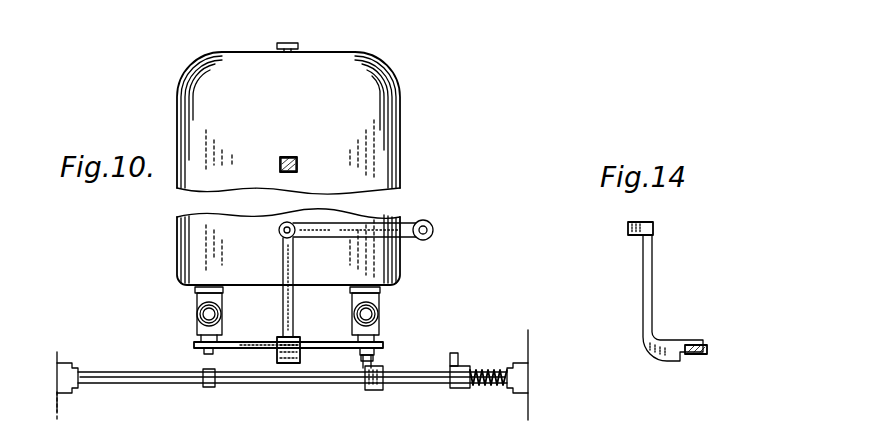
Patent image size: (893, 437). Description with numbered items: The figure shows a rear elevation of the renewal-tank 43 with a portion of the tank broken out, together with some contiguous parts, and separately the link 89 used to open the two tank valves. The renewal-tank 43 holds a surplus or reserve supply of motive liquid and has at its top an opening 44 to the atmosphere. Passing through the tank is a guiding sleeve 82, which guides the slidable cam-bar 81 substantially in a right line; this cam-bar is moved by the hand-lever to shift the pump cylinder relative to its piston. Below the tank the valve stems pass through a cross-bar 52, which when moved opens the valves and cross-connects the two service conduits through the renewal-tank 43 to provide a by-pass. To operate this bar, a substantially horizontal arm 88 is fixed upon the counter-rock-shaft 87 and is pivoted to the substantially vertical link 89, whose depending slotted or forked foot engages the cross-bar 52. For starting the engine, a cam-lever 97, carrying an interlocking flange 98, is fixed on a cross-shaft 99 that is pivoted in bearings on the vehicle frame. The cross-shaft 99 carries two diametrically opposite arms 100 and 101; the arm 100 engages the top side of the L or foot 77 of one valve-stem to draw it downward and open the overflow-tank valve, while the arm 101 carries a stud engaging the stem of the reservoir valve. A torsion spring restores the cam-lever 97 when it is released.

In FIG. 10, the renewal-tank 43 is at (399, 216).
In FIG. 10, the opening 44 is at (298, 46).
In FIG. 10, the cam-bar 81 is at (280, 164).
In FIG. 10, the guiding sleeve 82 is at (290, 157).
In FIG. 10, the counter-rock-shaft 87 is at (433, 230).
In FIG. 10, the arm 88 is at (347, 249).
In FIG. 14, the arm 88 is at (635, 238).
In FIG. 10, the link 89 is at (283, 263).
In FIG. 14, the link 89 is at (652, 268).
In FIG. 10, the cross-bar 52 is at (288, 320).
In FIG. 14, the cross-bar 52 is at (708, 348).
In FIG. 10, the arm 100 is at (372, 372).
In FIG. 10, the cross-shaft 99 is at (420, 381).
In FIG. 10, the arm 101 is at (210, 388).
In FIG. 10, the L or foot 77 is at (385, 392).
In FIG. 10, the interlocking flange 98 is at (469, 362).
In FIG. 10, the cam-lever 97 is at (477, 399).